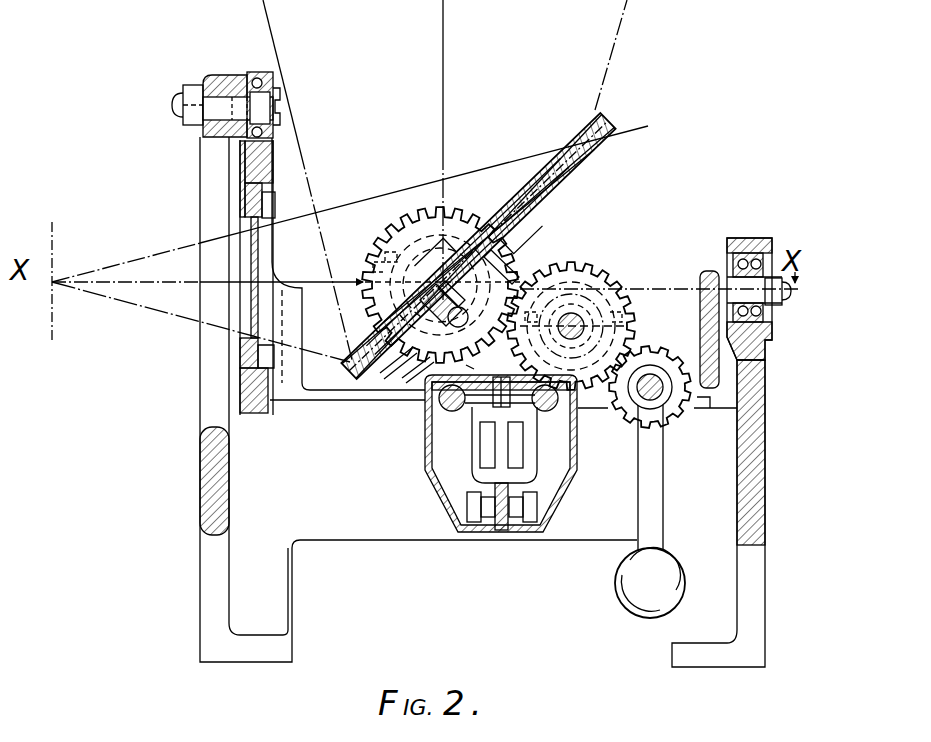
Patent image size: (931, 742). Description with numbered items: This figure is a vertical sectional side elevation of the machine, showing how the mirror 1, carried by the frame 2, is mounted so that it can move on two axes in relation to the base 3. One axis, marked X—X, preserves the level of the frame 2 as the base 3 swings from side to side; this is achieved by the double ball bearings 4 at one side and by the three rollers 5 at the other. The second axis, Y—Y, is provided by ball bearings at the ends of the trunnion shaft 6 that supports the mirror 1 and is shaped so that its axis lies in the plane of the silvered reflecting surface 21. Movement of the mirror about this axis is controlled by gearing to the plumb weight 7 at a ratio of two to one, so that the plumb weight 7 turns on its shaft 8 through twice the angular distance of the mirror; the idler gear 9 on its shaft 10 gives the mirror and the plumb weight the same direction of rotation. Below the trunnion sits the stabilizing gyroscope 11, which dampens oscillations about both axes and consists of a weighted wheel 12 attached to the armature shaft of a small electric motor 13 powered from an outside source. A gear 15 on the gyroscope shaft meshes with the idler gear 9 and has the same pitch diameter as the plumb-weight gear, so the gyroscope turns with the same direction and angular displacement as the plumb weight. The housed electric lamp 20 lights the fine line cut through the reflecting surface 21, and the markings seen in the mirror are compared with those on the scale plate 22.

The mirror 1 is at (610, 112).
The frame 2 is at (712, 265).
The base 3 is at (200, 512).
The double ball bearings 4 is at (754, 250).
The rollers 5 is at (255, 68).
The trunnion shaft 6 is at (490, 276).
The plumb weight 7 is at (613, 596).
The shaft 8 is at (652, 372).
The idler gear 9 is at (582, 315).
The shaft 10 is at (612, 278).
The stabilizing gyroscope 11 is at (430, 498).
The weighted wheel 12 is at (452, 420).
The electric motor 13 is at (548, 470).
The gear 15 is at (470, 368).
The housed electric lamp 20 is at (380, 376).
The silvered reflecting surface 21 is at (614, 124).
The scale plate 22 is at (248, 262).